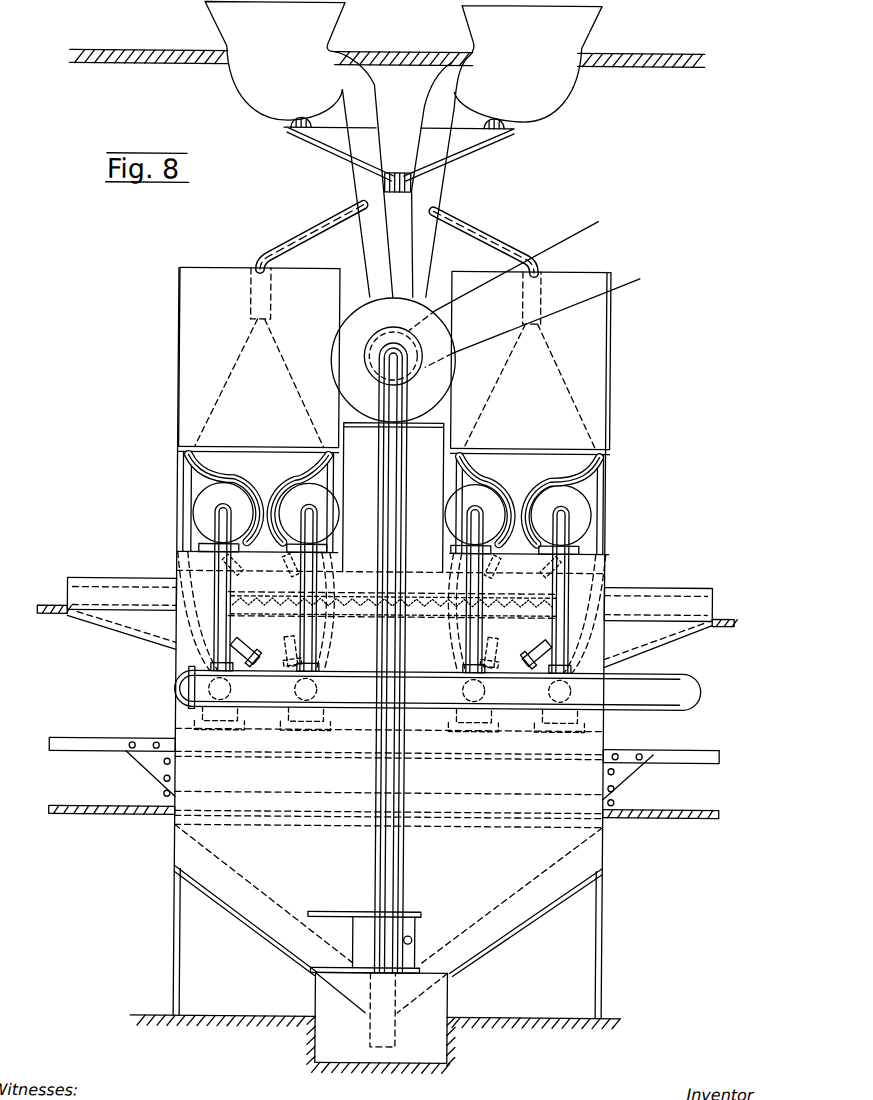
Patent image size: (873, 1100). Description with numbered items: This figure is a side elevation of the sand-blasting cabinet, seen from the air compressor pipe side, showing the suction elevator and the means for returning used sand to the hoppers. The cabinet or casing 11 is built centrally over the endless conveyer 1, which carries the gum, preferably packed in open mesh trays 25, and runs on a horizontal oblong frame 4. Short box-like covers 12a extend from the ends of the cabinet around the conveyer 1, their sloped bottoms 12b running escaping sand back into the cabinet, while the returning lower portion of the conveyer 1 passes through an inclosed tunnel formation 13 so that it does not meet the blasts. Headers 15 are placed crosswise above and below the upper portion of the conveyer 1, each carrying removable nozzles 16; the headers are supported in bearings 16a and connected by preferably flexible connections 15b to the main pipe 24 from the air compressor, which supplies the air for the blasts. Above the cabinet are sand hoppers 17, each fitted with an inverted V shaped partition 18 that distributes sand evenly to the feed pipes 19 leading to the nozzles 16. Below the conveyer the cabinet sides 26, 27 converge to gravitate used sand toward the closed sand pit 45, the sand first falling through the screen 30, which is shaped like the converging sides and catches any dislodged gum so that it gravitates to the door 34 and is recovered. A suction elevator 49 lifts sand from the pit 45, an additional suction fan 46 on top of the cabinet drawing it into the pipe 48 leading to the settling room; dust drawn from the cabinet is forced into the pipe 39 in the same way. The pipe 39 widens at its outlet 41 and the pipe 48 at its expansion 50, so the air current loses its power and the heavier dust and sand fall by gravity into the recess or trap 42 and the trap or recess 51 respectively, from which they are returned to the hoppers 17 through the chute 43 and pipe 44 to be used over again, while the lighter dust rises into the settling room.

The endless conveyer 1 is at (655, 812).
The horizontal oblong frame 4 is at (672, 752).
The cabinet or casing 11 is at (590, 722).
The box-like covers 12a is at (644, 600).
The bottoms of covers 12b is at (668, 644).
The tunnel formation 13 is at (418, 795).
The headers 15 is at (568, 668).
The connections 15b is at (557, 610).
The nozzles 16 is at (526, 650).
The bearings 16a is at (535, 556).
The sand hoppers 17 is at (395, 360).
The inverted V shaped partition 18 is at (537, 333).
The feed pipes 19 is at (600, 500).
The main pipe 24 is at (670, 695).
The trays 25 is at (352, 566).
The converging side 26 is at (280, 947).
The converging side 27 is at (490, 950).
The screen 30 is at (522, 890).
The door 34 is at (412, 921).
The pipe 39 is at (363, 155).
The outlet 41 is at (274, 61).
The recess or trap 42 is at (293, 104).
The chute 43 is at (394, 143).
The pipe 44 is at (468, 232).
The sand pit 45 is at (375, 1023).
The additional suction fan 46 is at (393, 435).
The pipe 48 is at (430, 156).
The suction elevator 49 is at (376, 842).
The expansion 50 is at (528, 63).
The trap or recess 51 is at (504, 108).